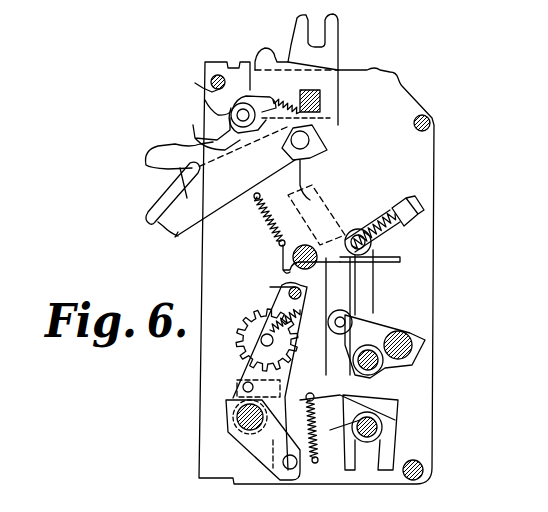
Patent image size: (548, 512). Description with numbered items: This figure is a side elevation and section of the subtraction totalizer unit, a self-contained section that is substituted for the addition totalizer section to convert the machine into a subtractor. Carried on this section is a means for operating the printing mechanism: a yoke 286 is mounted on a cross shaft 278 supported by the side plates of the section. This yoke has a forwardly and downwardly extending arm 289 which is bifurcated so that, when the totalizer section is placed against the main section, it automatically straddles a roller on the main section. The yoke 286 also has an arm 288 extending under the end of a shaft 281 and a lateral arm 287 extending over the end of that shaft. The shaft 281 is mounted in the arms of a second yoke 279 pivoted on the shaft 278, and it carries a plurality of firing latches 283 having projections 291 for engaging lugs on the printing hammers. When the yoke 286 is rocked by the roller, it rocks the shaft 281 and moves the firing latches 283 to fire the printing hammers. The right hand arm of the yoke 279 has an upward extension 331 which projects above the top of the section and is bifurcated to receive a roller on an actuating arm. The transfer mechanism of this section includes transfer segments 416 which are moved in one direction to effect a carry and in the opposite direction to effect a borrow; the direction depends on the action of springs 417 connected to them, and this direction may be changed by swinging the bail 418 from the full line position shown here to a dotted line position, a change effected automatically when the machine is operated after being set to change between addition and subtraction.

The upward extension 331 is at (337, 43).
The lateral arm 287 is at (237, 98).
The shaft 281 is at (233, 112).
The arm 288 is at (213, 140).
The projections 291 is at (188, 168).
The firing latches 283 is at (152, 213).
The arm 289 is at (175, 237).
The yoke 286 is at (330, 157).
The yoke 279 is at (323, 167).
The cross shaft 278 is at (300, 172).
The springs 417 is at (380, 215).
The bail 418 is at (412, 198).
The transfer segments 416 is at (366, 300).